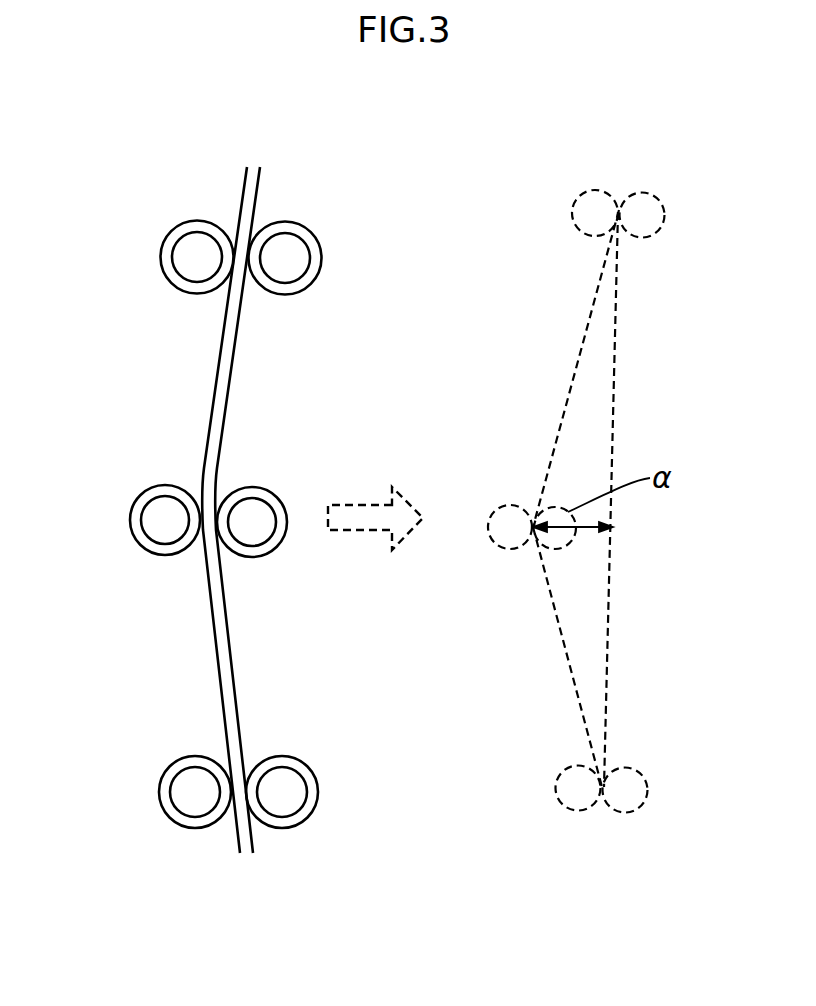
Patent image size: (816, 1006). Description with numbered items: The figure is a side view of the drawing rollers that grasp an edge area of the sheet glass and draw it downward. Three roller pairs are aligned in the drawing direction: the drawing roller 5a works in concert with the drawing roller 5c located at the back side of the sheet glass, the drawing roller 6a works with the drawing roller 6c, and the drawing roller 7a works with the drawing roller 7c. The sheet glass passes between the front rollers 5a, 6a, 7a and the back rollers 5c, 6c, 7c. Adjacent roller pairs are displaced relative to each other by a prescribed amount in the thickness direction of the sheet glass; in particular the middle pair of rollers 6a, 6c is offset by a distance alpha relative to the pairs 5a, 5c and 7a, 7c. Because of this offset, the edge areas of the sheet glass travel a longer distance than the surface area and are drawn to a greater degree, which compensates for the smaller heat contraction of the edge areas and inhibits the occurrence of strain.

The drawing roller 5a is at (160, 248).
The drawing roller 5c is at (313, 232).
The drawing roller 6a is at (128, 520).
The drawing roller 6c is at (280, 507).
The drawing roller 7a is at (170, 763).
The drawing roller 7c is at (315, 772).